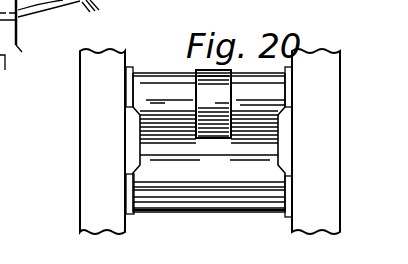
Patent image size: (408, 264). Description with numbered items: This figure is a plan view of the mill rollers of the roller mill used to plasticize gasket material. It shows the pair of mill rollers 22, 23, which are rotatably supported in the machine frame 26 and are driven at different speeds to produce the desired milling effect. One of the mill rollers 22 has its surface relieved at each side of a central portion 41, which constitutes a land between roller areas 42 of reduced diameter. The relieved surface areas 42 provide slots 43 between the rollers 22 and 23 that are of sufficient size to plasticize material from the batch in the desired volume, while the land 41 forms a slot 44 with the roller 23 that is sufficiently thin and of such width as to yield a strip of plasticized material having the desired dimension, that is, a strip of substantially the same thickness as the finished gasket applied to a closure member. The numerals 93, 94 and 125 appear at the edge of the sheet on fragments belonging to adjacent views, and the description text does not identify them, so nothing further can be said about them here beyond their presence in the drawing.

The mill roller 22 is at (162, 67).
The mill roller 23 is at (163, 215).
The machine frame 26 is at (80, 127).
The central portion 41 is at (208, 82).
The roller areas of reduced diameter 42 is at (160, 94).
The slots 43 is at (157, 137).
The slot 44 is at (214, 140).
The member 93 is at (67, 9).
The member 94 is at (112, 2).
The member 125 is at (14, 44).